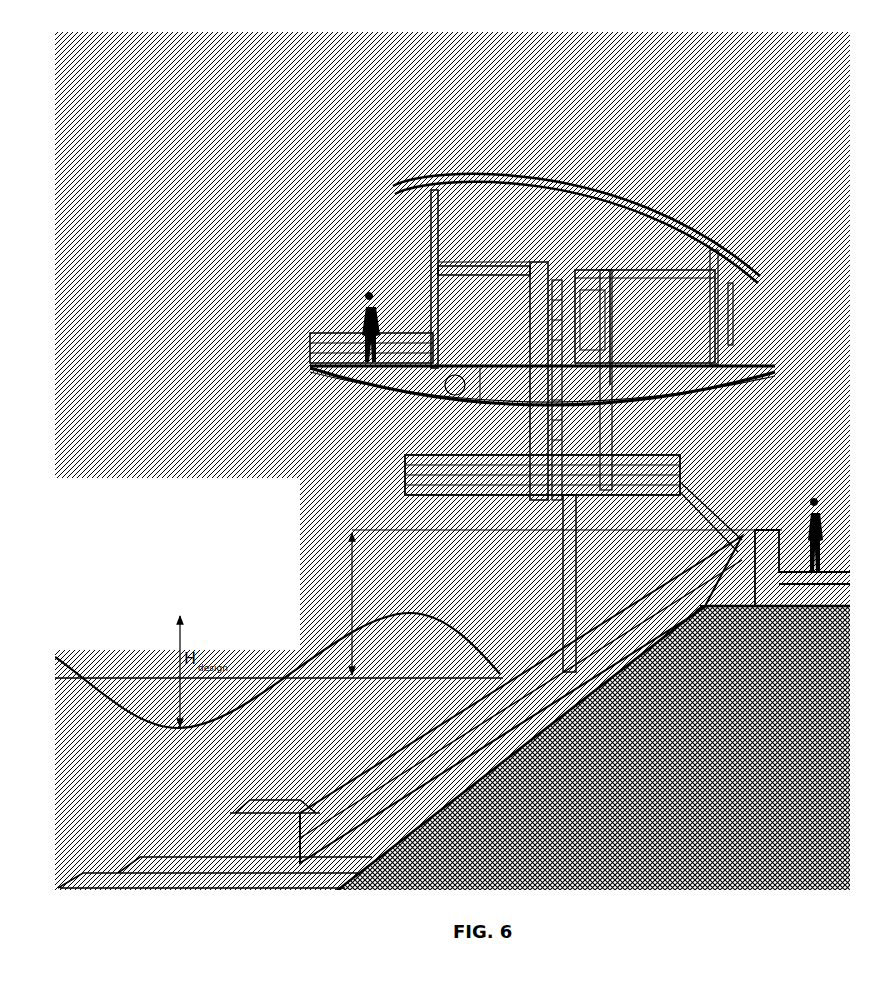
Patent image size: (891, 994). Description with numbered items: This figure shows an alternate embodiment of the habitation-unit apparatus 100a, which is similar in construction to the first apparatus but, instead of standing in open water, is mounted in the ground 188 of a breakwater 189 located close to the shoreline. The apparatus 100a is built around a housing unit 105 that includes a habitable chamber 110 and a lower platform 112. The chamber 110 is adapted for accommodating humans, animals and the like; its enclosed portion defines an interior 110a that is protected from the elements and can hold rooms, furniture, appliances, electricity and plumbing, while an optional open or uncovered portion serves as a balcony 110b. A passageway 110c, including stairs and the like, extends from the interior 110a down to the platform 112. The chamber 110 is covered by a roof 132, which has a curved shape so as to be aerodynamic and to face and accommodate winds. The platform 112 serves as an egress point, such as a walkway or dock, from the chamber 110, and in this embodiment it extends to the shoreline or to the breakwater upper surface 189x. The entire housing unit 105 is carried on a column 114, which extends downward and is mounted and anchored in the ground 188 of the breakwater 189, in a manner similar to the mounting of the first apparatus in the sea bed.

The apparatus 100a is at (207, 262).
The housing unit 105 is at (777, 280).
The habitable chamber 110 is at (427, 216).
The interior 110a is at (554, 236).
The balcony 110b is at (401, 326).
The passageway 110c is at (534, 423).
The lower platform 112 is at (421, 478).
The column 114 is at (562, 561).
The roof 132 is at (547, 178).
The ground 188 is at (702, 824).
The breakwater 189 is at (376, 769).
The breakwater upper surface 189x is at (728, 553).